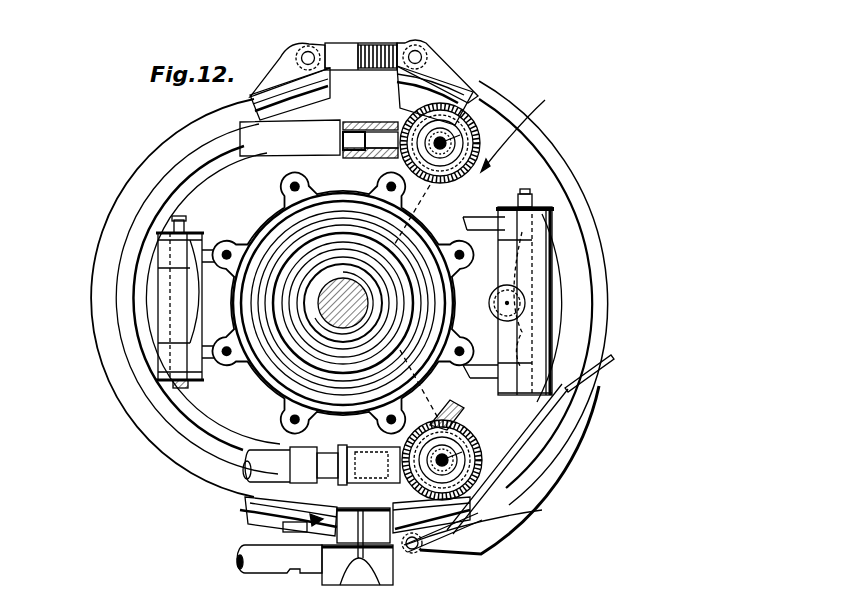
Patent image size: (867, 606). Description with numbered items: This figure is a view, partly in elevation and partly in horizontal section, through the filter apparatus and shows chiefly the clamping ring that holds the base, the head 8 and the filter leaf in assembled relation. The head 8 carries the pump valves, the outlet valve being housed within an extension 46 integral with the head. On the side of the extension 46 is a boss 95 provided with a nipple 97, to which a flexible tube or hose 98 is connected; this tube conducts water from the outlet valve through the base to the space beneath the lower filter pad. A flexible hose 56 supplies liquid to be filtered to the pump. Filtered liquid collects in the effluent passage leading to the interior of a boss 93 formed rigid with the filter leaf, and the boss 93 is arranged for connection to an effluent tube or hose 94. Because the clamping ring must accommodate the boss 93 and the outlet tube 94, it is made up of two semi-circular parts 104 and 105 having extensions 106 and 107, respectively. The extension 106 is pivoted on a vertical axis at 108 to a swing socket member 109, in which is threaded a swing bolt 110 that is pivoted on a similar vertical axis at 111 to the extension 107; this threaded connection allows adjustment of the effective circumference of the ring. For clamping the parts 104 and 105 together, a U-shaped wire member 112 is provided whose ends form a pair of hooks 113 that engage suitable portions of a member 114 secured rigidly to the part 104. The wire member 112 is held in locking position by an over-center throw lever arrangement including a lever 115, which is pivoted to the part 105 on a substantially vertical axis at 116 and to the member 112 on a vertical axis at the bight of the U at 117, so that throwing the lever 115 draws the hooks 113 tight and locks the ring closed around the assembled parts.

The head 8 is at (514, 126).
The extension 46 is at (463, 127).
The flexible hose 56 is at (245, 463).
The boss 93 is at (384, 562).
The effluent tube or hose 94 is at (252, 548).
The boss 95 is at (360, 122).
The nipple 97 is at (343, 156).
The flexible tube or hose 98 is at (90, 330).
The semi-circular part 104 is at (243, 117).
The semi-circular part 105 is at (533, 167).
The extension 106 is at (283, 62).
The extension 107 is at (452, 78).
The pivot 108 is at (311, 54).
The swing socket member 109 is at (356, 43).
The swing bolt 110 is at (380, 38).
The pivot 111 is at (422, 52).
The U-shaped wire member 112 is at (490, 533).
The hooks 113 is at (310, 517).
The member 114 is at (303, 541).
The lever 115 is at (566, 462).
The pivot 116 is at (430, 546).
The pivot 117 is at (520, 505).